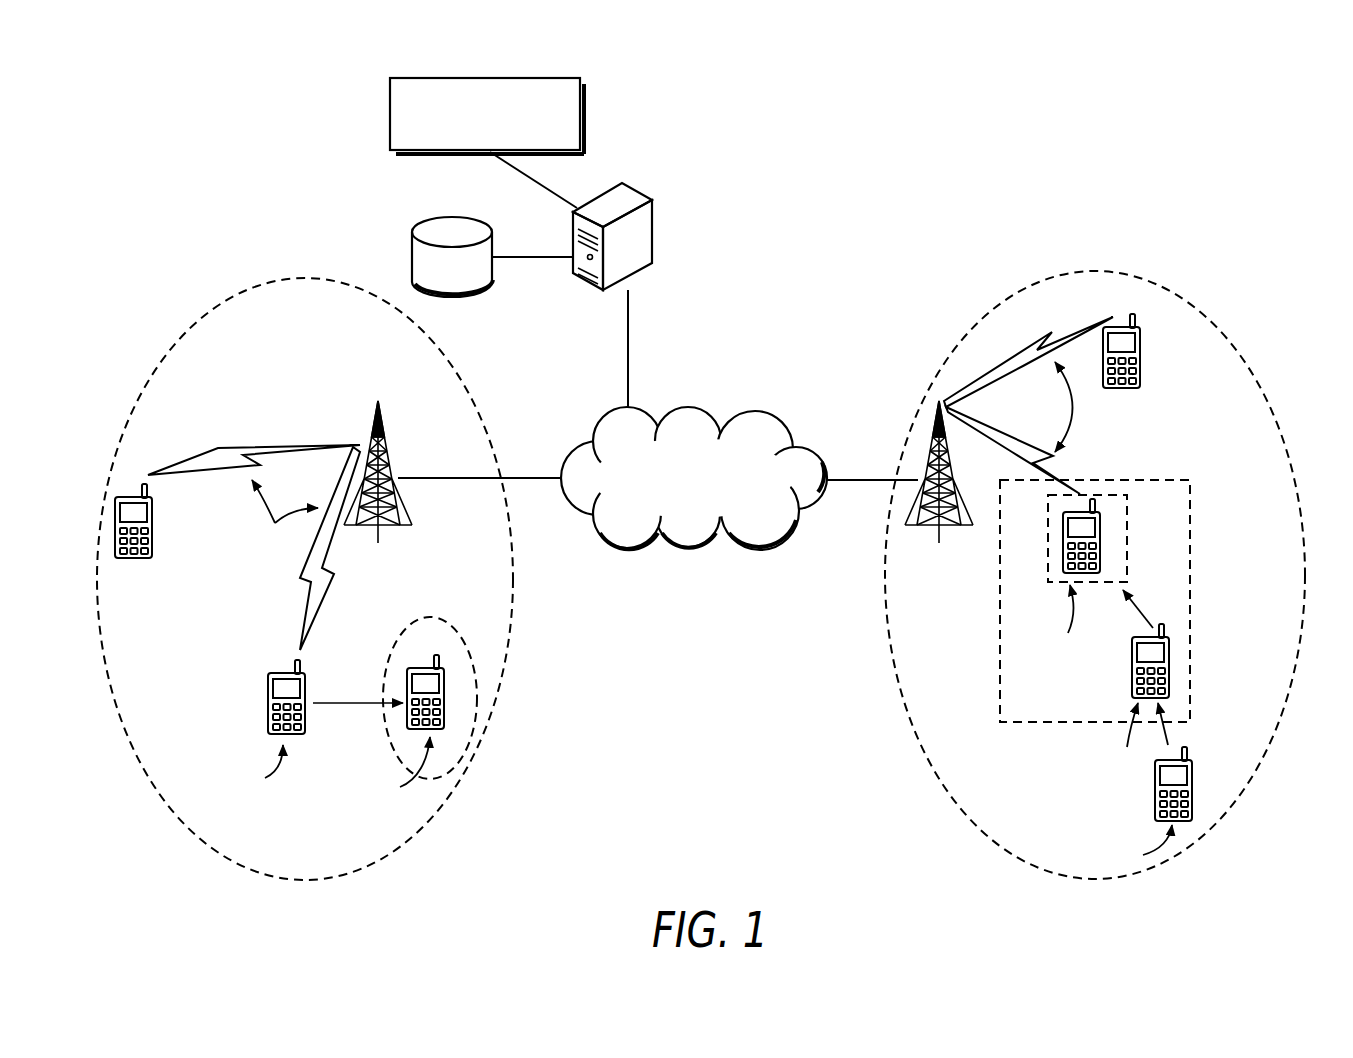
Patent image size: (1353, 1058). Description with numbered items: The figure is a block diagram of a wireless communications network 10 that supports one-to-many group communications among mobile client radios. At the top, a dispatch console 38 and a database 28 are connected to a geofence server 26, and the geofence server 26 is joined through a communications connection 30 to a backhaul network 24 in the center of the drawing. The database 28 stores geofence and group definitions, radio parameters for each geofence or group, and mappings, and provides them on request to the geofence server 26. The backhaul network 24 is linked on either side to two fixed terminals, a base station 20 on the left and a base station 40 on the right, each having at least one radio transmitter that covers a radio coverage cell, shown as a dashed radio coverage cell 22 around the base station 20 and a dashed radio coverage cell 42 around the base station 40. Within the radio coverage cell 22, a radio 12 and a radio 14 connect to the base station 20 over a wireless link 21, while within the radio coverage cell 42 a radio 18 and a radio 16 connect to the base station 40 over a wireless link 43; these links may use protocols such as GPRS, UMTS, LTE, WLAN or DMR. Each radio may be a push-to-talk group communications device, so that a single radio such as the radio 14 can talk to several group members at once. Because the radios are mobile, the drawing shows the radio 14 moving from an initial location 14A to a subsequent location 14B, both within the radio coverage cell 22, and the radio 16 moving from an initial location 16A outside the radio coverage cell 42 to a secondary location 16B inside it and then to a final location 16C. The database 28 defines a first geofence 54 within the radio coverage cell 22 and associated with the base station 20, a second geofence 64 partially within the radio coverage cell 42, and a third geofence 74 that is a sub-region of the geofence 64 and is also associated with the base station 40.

The communications network 10 is at (158, 71).
The client radio 12 is at (152, 515).
The client radio 14 is at (288, 672).
The initial location 14A is at (251, 771).
The subsequent location 14B is at (391, 770).
The client radio 16 is at (1100, 540).
The initial location 16A is at (1134, 846).
The secondary location 16B is at (1129, 741).
The final location 16C is at (1065, 625).
The client radio 18 is at (1142, 352).
The fixed terminal 20 is at (383, 442).
The wireless link 21 is at (285, 514).
The radio coverage cell 22 is at (192, 327).
The backhaul network 24 is at (830, 493).
The geofence server 26 is at (652, 232).
The database 28 is at (448, 217).
The communications connection 30 is at (628, 330).
The dispatch console 38 is at (390, 99).
The fixed terminal 40 is at (935, 425).
The radio coverage cell 42 is at (1195, 312).
The wireless link 43 is at (1070, 407).
The first geofence 54 is at (427, 618).
The second geofence 64 is at (1150, 480).
The third geofence 74 is at (1128, 565).